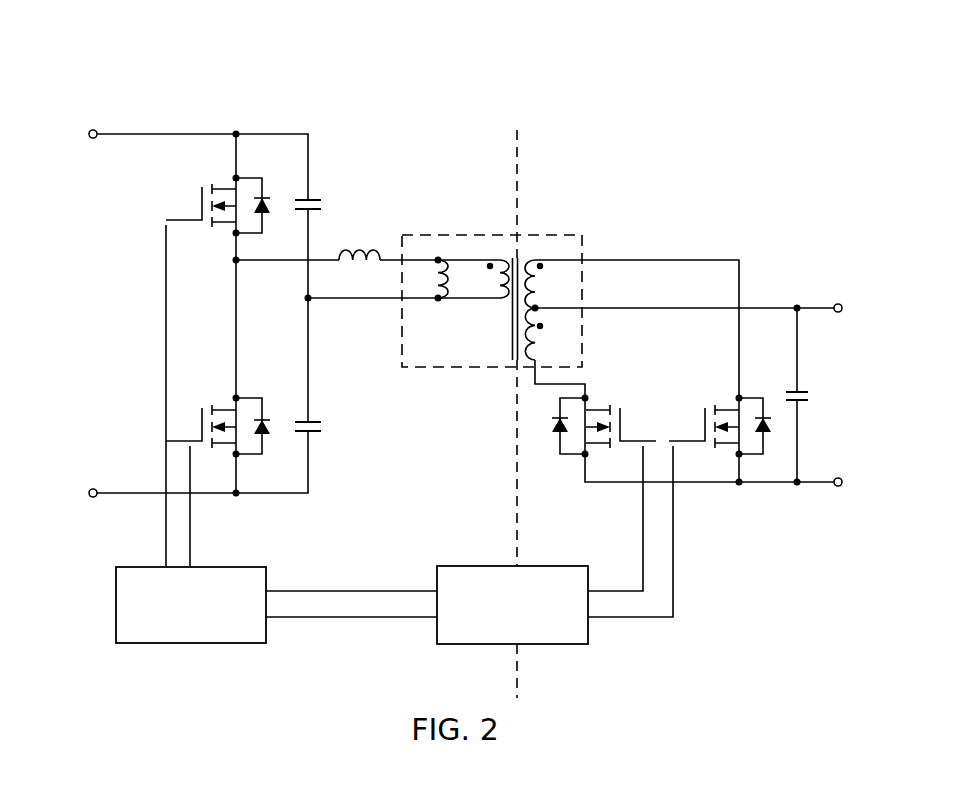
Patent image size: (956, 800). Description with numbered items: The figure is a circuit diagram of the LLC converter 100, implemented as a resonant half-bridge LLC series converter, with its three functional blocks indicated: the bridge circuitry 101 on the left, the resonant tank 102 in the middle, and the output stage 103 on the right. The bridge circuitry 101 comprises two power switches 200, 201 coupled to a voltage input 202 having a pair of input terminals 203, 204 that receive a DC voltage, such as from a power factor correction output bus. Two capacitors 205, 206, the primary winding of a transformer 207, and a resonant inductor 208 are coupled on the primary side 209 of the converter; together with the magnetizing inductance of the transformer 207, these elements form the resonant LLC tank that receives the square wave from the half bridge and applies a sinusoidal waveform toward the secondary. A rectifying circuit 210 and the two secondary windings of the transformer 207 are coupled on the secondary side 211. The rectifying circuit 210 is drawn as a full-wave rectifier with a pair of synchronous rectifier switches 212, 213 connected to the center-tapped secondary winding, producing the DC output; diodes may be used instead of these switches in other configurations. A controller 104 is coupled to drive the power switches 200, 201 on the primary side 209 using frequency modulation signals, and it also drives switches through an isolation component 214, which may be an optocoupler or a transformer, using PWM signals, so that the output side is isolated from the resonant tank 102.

The LLC converter 100 is at (285, 32).
The bridge circuitry 101 is at (186, 98).
The resonant tank 102 is at (415, 120).
The output stage 103 is at (690, 120).
The controller 104 is at (216, 567).
The power switch 200 is at (222, 184).
The power switch 201 is at (222, 408).
The voltage input 202 is at (110, 262).
The input terminal 203 is at (88, 134).
The input terminal 204 is at (90, 497).
The capacitor 205 is at (315, 197).
The capacitor 206 is at (315, 420).
The transformer 207 is at (452, 235).
The resonant inductor 208 is at (356, 246).
The primary side 209 is at (459, 164).
The rectifying circuit 210 is at (778, 297).
The secondary side 211 is at (575, 164).
The synchronous rectifier switch 212 is at (598, 409).
The synchronous rectifier switch 213 is at (727, 409).
The isolation component 214 is at (488, 566).